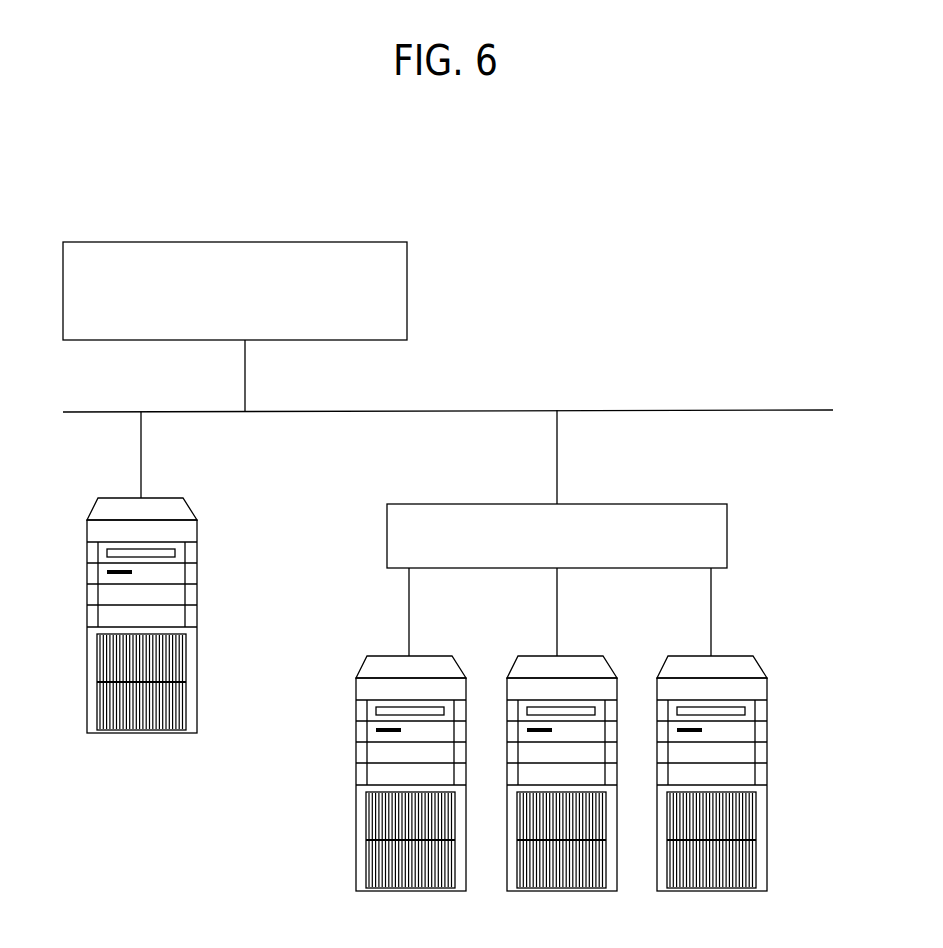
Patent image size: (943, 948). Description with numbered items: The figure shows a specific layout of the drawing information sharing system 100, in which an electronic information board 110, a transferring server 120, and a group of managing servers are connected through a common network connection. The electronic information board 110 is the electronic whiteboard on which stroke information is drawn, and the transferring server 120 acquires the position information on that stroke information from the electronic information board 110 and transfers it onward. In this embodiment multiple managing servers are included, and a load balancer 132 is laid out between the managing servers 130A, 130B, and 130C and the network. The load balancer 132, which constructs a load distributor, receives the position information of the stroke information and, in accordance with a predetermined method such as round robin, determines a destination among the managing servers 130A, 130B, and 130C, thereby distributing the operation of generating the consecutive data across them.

The drawing information sharing system 100 is at (107, 183).
The electronic information board 110 is at (375, 242).
The transferring server 120 is at (162, 500).
The load balancer 132 is at (692, 503).
The managing server 130A is at (431, 660).
The managing server 130B is at (588, 660).
The managing server 130C is at (731, 660).